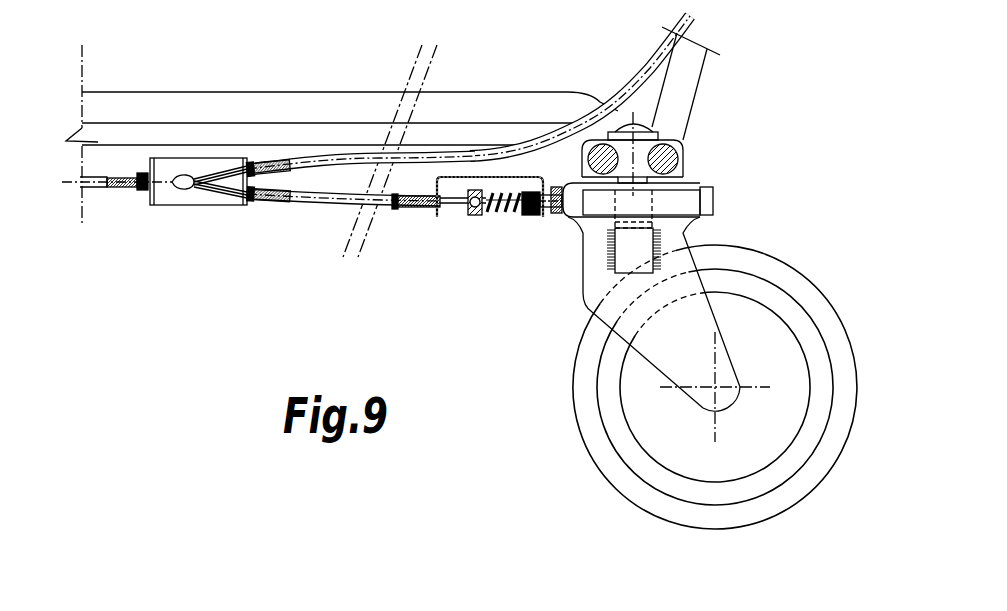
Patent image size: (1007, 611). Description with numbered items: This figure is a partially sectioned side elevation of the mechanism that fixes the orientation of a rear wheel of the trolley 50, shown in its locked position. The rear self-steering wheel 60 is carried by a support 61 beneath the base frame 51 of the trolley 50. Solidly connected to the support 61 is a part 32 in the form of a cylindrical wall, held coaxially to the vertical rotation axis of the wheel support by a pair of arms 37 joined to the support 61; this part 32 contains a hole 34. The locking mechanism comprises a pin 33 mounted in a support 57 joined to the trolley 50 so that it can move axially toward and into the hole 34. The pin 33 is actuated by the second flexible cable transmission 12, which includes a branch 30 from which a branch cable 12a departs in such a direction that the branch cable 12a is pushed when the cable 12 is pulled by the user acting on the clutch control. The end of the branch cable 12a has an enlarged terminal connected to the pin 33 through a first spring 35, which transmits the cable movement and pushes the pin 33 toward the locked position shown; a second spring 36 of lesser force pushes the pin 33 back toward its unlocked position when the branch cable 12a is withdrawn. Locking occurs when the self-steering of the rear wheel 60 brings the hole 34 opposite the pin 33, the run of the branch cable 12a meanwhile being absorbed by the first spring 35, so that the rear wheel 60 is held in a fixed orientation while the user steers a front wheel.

The trolley 50 is at (314, 80).
The base frame 51 is at (208, 156).
The branch 30 is at (208, 212).
The second flexible cable transmission 12 is at (128, 190).
The branch cable 12a is at (270, 202).
The support 57 is at (473, 177).
The first spring 35 is at (489, 216).
The second spring 36 is at (529, 217).
The pin 33 is at (547, 217).
The hole 34 is at (568, 188).
The part 32 is at (716, 200).
The arms 37 is at (620, 255).
The support 61 is at (652, 362).
The rear self-steering wheel 60 is at (595, 440).